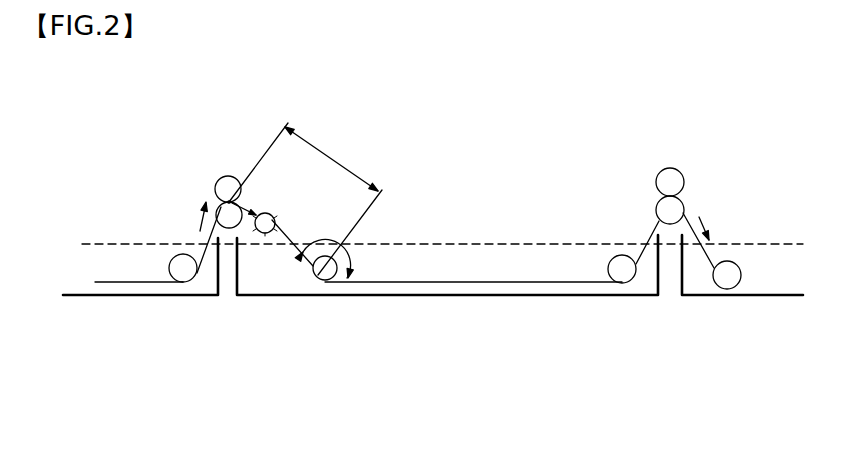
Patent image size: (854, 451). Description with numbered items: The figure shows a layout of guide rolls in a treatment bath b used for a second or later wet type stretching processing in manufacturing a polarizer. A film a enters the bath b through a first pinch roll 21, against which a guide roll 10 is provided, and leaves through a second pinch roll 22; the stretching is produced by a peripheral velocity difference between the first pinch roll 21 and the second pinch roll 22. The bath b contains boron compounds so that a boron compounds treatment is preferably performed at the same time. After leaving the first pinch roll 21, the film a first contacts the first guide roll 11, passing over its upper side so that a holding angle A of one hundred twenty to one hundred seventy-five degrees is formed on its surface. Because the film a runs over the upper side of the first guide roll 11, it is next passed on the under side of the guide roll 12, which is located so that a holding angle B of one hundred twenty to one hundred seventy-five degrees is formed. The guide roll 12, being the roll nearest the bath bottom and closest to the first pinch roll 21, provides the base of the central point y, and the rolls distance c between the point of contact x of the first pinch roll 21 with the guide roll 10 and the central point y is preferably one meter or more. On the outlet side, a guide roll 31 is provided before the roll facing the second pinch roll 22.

The guide roll 10 is at (229, 229).
The first guide roll 11 is at (268, 214).
The guide roll 12 is at (318, 280).
The first pinch roll 21 is at (233, 176).
The second pinch roll 22 is at (685, 172).
The guide roll 31 is at (620, 284).
The film a is at (200, 250).
The treatment bath b is at (545, 228).
The rolls distance c is at (305, 199).
The point of contact x is at (229, 202).
The central point y is at (329, 281).
The holding angle A is at (262, 234).
The holding angle B is at (347, 258).